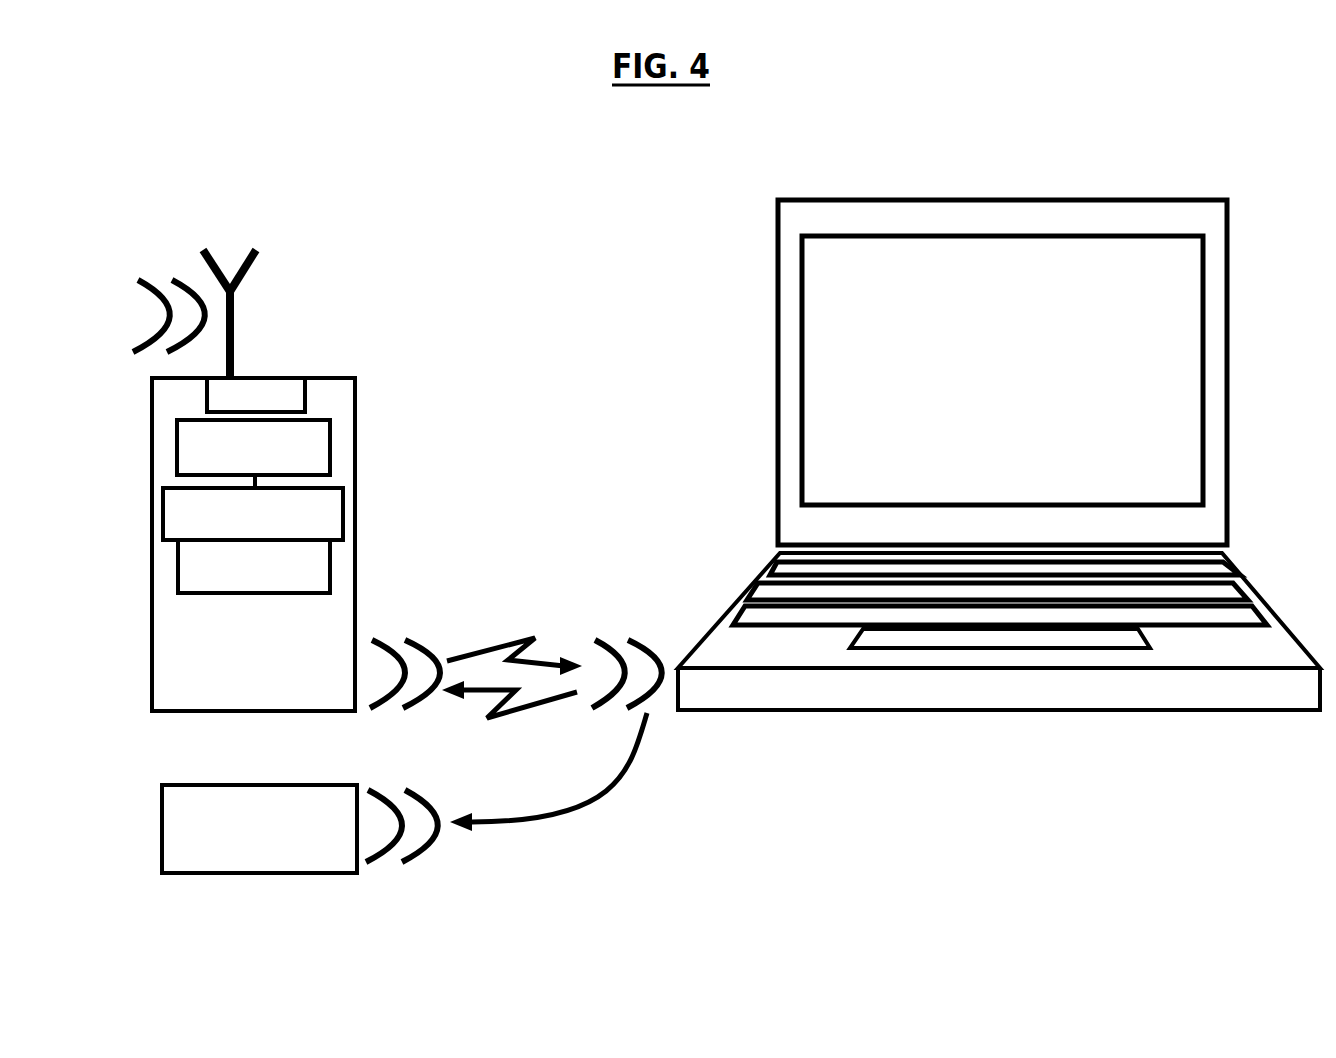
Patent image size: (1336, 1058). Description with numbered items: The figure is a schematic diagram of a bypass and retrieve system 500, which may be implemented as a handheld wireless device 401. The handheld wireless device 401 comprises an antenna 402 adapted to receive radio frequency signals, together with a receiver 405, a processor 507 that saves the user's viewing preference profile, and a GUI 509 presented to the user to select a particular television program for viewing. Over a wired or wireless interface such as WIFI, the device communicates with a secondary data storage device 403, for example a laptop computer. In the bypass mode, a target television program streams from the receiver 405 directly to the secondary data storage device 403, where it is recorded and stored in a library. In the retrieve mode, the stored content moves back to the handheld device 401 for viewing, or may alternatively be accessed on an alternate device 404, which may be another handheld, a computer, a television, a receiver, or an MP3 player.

The system 500 is at (524, 192).
The handheld wireless device 401 is at (218, 713).
The antenna 402 is at (262, 292).
The secondary data storage device 403 is at (1172, 712).
The alternate device 404 is at (162, 816).
The receiver 405 is at (330, 443).
The processor 507 is at (343, 506).
The GUI 509 is at (330, 568).